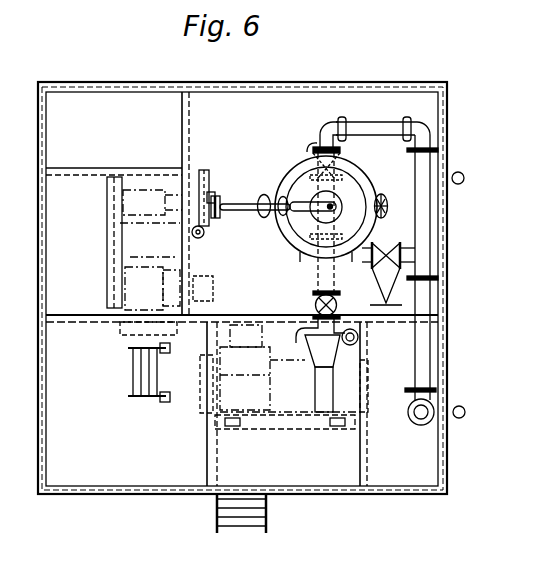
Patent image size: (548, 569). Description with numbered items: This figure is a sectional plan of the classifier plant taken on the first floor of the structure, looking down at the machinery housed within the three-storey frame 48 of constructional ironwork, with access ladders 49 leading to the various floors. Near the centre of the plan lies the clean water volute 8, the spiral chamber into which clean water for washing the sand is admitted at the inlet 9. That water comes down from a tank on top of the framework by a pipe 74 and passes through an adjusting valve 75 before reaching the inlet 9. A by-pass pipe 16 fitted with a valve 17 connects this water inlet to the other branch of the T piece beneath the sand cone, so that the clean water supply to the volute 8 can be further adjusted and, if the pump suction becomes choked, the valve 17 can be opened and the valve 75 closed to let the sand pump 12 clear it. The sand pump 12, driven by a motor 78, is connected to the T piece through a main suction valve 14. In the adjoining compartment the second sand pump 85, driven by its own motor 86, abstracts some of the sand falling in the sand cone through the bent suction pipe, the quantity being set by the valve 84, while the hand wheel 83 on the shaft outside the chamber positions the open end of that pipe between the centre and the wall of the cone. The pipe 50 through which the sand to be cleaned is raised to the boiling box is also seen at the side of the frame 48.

The frame 48 is at (441, 92).
The pipe 50 is at (464, 179).
The by-pass pipe 16 is at (378, 124).
The valve 17 is at (310, 146).
The volute 8 is at (305, 252).
The valve 84 is at (271, 220).
The hand wheel 83 is at (372, 199).
The second sand pump 85 is at (199, 171).
The motor 86 is at (148, 262).
The inlet 9 is at (372, 246).
The adjusting valve 75 is at (379, 275).
The main suction valve 14 is at (336, 304).
The sand pump 12 is at (300, 326).
The pipe 74 is at (414, 370).
The motor 78 is at (258, 389).
The access ladders 49 is at (138, 374).